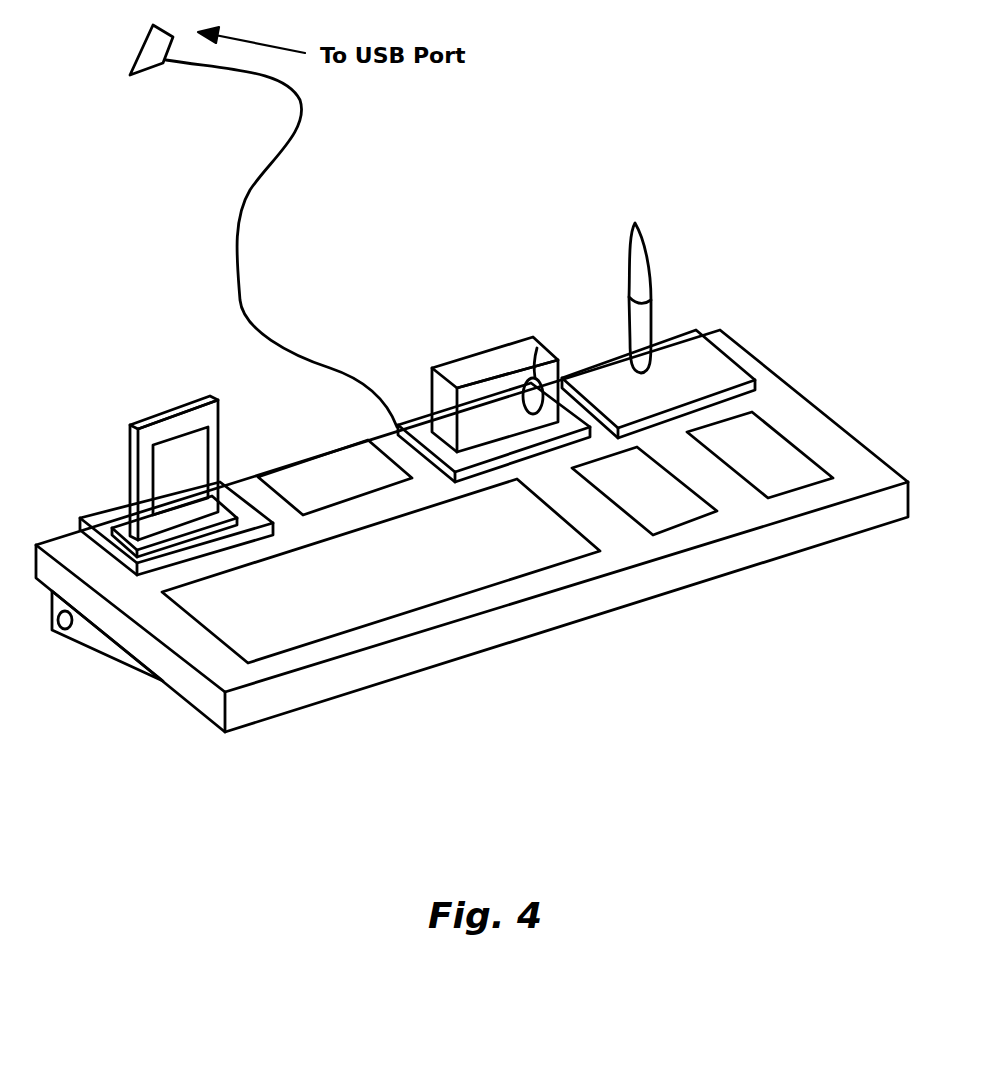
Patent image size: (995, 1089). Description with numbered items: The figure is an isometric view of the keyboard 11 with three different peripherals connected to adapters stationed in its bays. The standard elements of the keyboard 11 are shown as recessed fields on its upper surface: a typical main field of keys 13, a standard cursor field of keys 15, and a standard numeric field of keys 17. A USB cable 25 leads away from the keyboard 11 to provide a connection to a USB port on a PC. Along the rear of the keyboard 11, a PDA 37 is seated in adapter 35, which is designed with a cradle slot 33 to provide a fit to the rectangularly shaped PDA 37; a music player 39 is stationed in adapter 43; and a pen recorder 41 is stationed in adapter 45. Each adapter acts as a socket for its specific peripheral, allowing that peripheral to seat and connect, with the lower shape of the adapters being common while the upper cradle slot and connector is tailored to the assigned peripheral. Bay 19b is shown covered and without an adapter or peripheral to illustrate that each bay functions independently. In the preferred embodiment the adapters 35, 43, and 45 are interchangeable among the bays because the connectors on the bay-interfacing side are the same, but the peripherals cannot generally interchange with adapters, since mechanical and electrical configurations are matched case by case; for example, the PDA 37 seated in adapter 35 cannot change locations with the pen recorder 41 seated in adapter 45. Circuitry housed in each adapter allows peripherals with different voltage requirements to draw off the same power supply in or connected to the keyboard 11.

The keyboard 11 is at (824, 357).
The main field of keys 13 is at (308, 622).
The cursor field of keys 15 is at (675, 505).
The numeric field of keys 17 is at (790, 472).
The bay 19b is at (353, 478).
The USB cable 25 is at (235, 283).
The cradle slot 33 is at (127, 525).
The adapter 35 is at (98, 522).
The Personal Digital Assistant 37 is at (173, 403).
The music player 39 is at (482, 343).
The pen recorder 41 is at (631, 220).
The adapter 43 is at (427, 412).
The adapter 45 is at (620, 348).